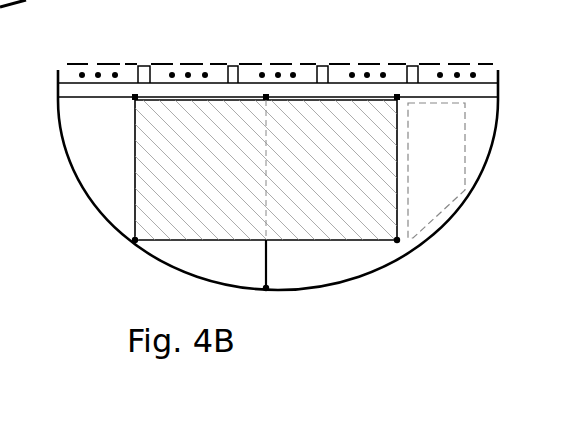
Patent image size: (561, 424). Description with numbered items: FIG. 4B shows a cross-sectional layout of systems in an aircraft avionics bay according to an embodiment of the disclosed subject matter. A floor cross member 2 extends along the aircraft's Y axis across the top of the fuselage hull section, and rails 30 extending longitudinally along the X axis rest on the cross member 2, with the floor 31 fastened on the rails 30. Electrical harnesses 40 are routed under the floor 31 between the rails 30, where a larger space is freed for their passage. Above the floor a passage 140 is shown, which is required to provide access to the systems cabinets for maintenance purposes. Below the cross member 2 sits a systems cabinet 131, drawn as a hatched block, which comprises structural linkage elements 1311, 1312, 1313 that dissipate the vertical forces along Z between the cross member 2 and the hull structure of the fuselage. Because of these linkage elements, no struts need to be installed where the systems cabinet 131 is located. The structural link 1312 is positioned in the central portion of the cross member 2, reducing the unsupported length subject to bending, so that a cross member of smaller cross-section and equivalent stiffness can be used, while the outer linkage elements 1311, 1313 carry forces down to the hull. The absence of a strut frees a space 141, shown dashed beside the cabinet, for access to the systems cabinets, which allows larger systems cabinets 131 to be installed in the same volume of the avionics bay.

The floor cross member 2 is at (90, 90).
The passage 140 is at (67, 0).
The rail 30 is at (146, 66).
The floor 31 is at (215, 63).
The electrical harness 40 is at (352, 72).
The systems cabinet 131 is at (160, 180).
The structural linkage element 1311 is at (133, 242).
The structural link 1312 is at (266, 288).
The structural linkage element 1313 is at (397, 242).
The space 141 is at (437, 180).